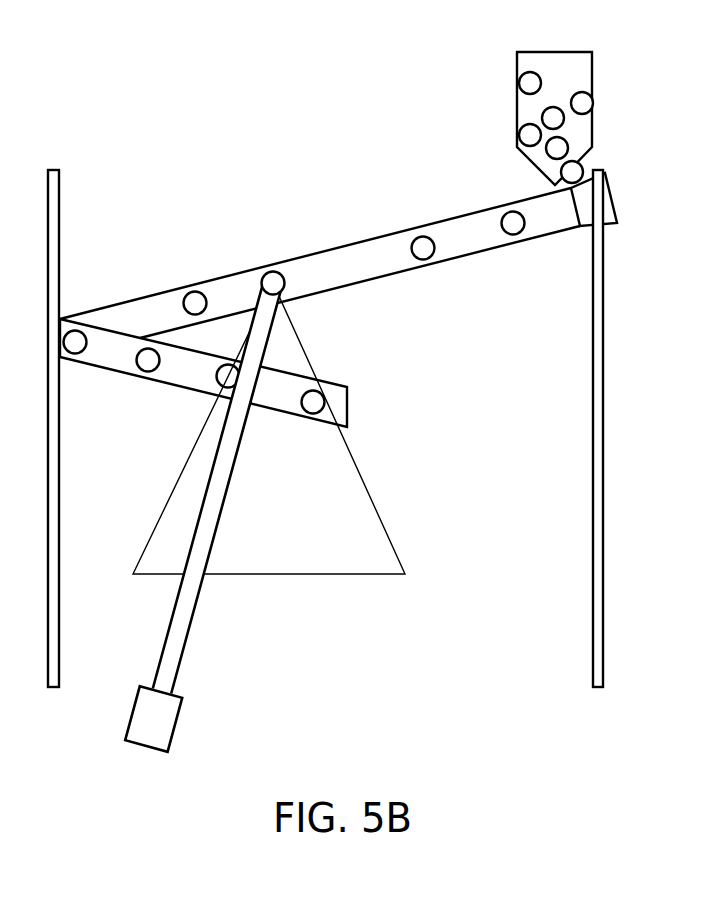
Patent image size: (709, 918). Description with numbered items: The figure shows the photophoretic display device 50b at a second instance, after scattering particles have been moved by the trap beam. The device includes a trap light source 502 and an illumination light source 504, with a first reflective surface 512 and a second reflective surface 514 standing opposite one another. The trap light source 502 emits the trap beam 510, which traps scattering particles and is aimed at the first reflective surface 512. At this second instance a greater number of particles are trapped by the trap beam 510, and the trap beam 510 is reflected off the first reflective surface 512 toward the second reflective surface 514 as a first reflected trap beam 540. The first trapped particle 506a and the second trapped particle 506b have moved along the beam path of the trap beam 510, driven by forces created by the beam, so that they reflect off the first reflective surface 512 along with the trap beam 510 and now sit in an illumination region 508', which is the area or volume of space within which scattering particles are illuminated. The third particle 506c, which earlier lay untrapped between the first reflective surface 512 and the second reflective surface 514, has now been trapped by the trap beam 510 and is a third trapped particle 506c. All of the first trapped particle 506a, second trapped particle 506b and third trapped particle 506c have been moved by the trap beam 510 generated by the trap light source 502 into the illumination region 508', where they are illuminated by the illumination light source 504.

The material handling system 50b is at (370, 393).
The trap light source 502 is at (618, 213).
The illumination light source 504 is at (180, 720).
The first trapped particle 506a is at (320, 400).
The second trapped particle 506b is at (223, 383).
The third trapped particle 506c is at (272, 272).
The illumination region 508' is at (292, 428).
The trap beam 510 is at (378, 252).
The first reflective surface 512 is at (59, 623).
The second reflective surface 514 is at (592, 645).
The first reflected trap beam 540 is at (293, 386).